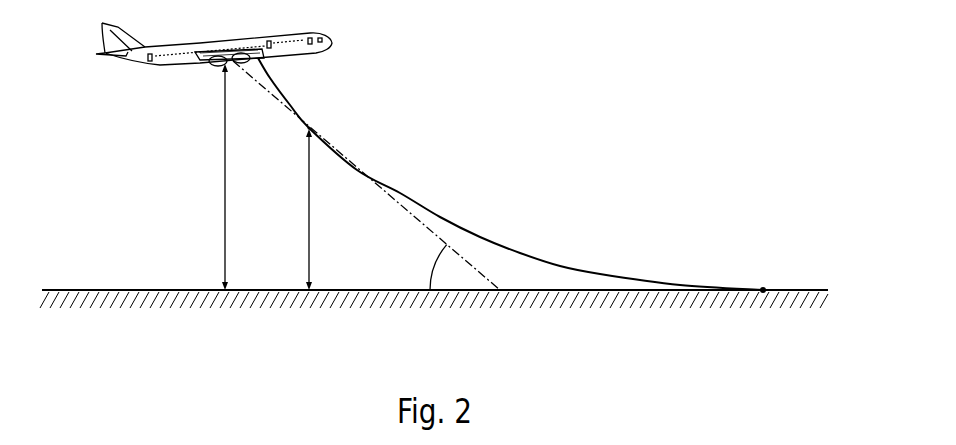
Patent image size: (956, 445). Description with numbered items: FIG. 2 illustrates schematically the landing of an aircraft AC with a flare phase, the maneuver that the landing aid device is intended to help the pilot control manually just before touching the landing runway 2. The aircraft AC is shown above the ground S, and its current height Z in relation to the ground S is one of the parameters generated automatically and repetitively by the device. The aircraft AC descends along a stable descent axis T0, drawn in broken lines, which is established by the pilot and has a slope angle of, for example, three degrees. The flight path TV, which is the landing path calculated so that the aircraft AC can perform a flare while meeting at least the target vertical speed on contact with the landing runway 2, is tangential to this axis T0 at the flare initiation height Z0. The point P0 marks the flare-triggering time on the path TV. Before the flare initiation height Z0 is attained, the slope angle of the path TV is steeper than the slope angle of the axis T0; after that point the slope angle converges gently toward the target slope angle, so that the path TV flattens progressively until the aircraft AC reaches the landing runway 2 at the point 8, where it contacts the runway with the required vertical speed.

The aircraft AC is at (162, 67).
The ground S is at (70, 284).
The landing runway 2 is at (795, 290).
The point of contact 8 is at (763, 293).
The height Z is at (216, 177).
The flare initiation height Z0 is at (295, 209).
The flare-triggering point P0 is at (318, 120).
The flight path TV is at (404, 194).
The stable descent axis T0 is at (434, 233).